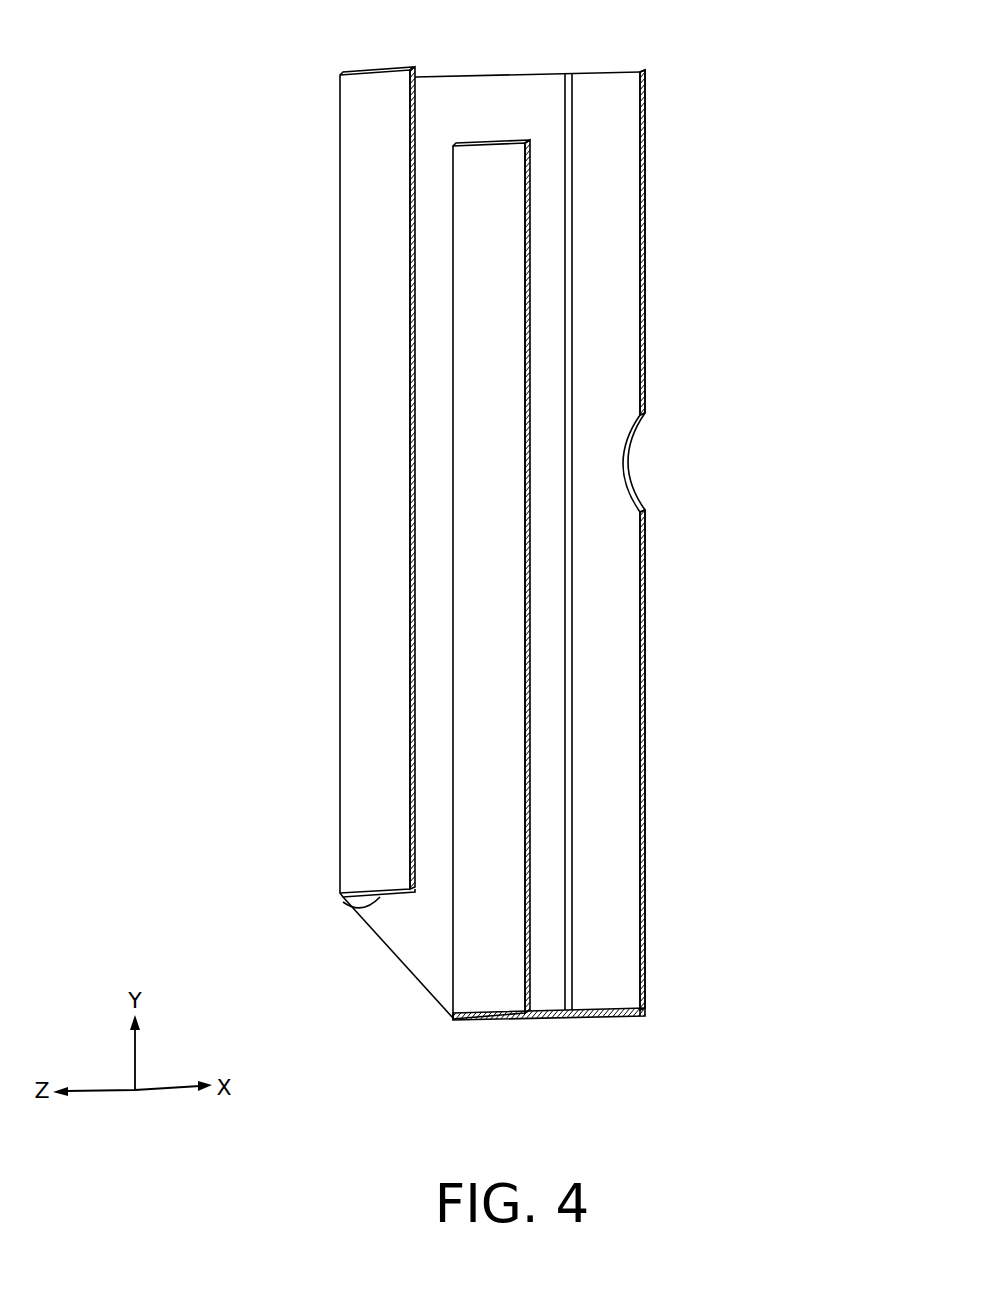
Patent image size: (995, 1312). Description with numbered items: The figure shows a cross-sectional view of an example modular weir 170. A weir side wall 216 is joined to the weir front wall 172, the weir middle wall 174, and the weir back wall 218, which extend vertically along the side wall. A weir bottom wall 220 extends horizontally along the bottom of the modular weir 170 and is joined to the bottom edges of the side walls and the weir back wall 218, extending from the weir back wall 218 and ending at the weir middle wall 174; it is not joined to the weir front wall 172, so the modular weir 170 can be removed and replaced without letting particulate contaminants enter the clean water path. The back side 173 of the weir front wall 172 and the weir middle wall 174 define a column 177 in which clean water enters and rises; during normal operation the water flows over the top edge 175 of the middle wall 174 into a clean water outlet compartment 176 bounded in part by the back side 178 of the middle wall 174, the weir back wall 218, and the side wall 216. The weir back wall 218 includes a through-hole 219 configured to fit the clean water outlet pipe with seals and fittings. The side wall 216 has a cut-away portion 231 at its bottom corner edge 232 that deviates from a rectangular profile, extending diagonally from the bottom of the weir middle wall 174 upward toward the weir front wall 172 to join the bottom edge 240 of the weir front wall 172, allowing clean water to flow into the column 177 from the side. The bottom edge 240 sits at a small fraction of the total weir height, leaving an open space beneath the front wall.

The modular weir 170 is at (292, 433).
The weir front wall 172 is at (375, 113).
The back side of the weir front wall 173 is at (415, 95).
The weir middle wall 174 is at (485, 987).
The top edge of the middle wall 175 is at (510, 146).
The clean water outlet compartment 176 is at (530, 163).
The column 177 is at (426, 885).
The back side of the middle wall 178 is at (612, 158).
The weir side wall 216 is at (487, 77).
The weir back wall 218 is at (645, 232).
The through-hole 219 is at (627, 464).
The weir bottom wall 220 is at (565, 1020).
The cut-away portion 231 is at (444, 1025).
The bottom corner edge 232 is at (382, 945).
The bottom edge of the weir front wall 240 is at (343, 902).